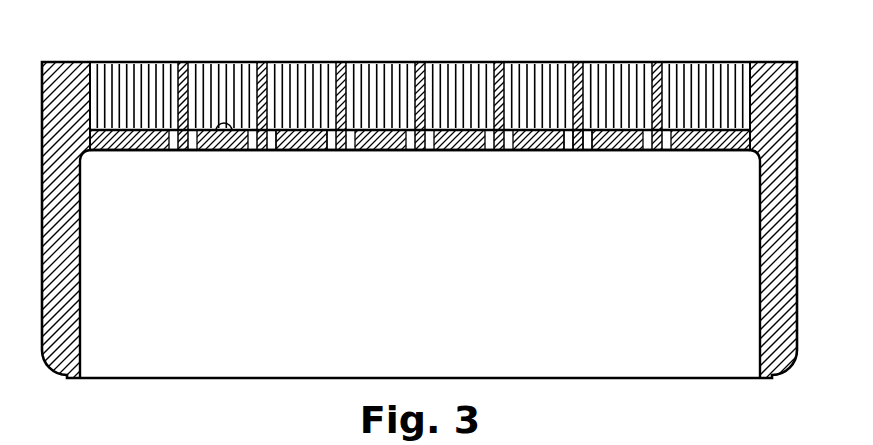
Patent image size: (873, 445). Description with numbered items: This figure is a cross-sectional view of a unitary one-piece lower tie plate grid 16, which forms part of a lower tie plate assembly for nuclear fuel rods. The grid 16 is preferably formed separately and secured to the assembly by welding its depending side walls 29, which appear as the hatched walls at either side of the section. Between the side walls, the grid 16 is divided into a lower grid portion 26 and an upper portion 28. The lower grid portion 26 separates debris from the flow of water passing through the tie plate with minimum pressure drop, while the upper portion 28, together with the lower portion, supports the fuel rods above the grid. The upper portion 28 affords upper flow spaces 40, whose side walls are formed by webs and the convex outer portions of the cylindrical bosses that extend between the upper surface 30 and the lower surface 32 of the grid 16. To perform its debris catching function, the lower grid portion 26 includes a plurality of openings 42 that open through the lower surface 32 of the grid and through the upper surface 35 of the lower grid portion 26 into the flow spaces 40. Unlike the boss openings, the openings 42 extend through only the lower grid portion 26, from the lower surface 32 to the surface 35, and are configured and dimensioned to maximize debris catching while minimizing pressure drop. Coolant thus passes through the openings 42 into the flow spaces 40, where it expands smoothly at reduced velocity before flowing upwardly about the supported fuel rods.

The lower tie plate grid 16 is at (798, 92).
The side walls 29 is at (790, 216).
The upper surface 30 is at (310, 62).
The upper flow spaces 40 is at (392, 86).
The upper portion 28 is at (485, 88).
The lower grid portion 26 is at (542, 152).
The openings 42 is at (590, 152).
The lower surface 32 is at (296, 150).
The upper surface of the lower grid portion 35 is at (216, 150).